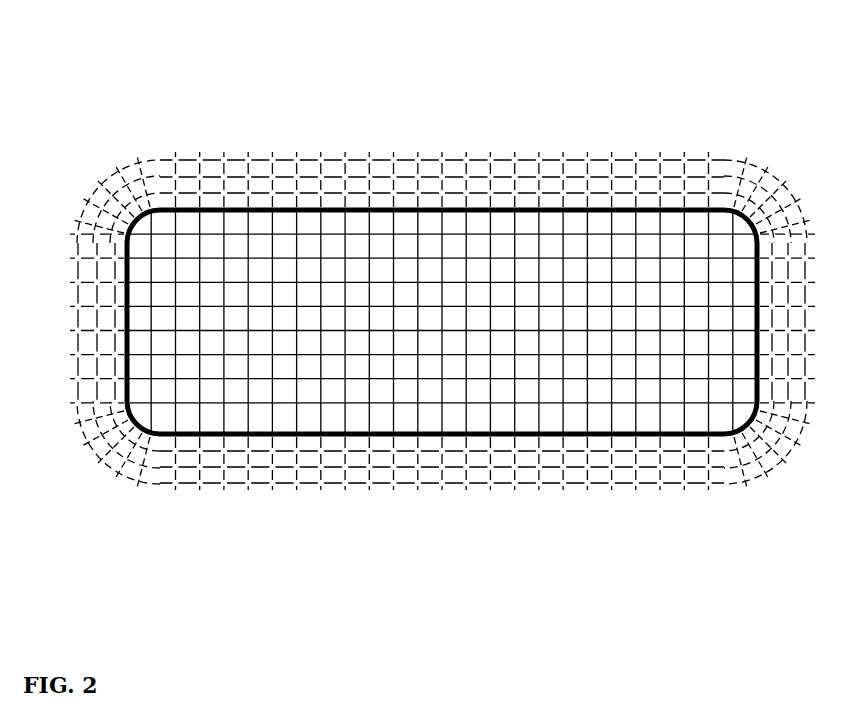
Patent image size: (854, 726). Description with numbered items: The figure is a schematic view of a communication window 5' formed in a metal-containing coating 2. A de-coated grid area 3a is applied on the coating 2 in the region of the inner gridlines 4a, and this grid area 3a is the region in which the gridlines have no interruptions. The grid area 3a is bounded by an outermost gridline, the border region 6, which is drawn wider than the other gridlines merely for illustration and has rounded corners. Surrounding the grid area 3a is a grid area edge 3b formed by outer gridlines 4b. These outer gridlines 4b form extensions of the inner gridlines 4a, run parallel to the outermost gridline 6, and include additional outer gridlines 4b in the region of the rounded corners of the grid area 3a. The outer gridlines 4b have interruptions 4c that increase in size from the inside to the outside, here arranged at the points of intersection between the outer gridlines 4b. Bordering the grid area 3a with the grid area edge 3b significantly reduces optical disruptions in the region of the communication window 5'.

The metal-containing coating 2 is at (138, 550).
The grid area 3a is at (485, 208).
The grid area edge 3b is at (480, 470).
The inner gridlines 4a is at (216, 250).
The outer gridlines 4b is at (287, 468).
The interruptions 4c is at (615, 483).
The communication window 5' is at (111, 226).
The border region 6 is at (713, 207).